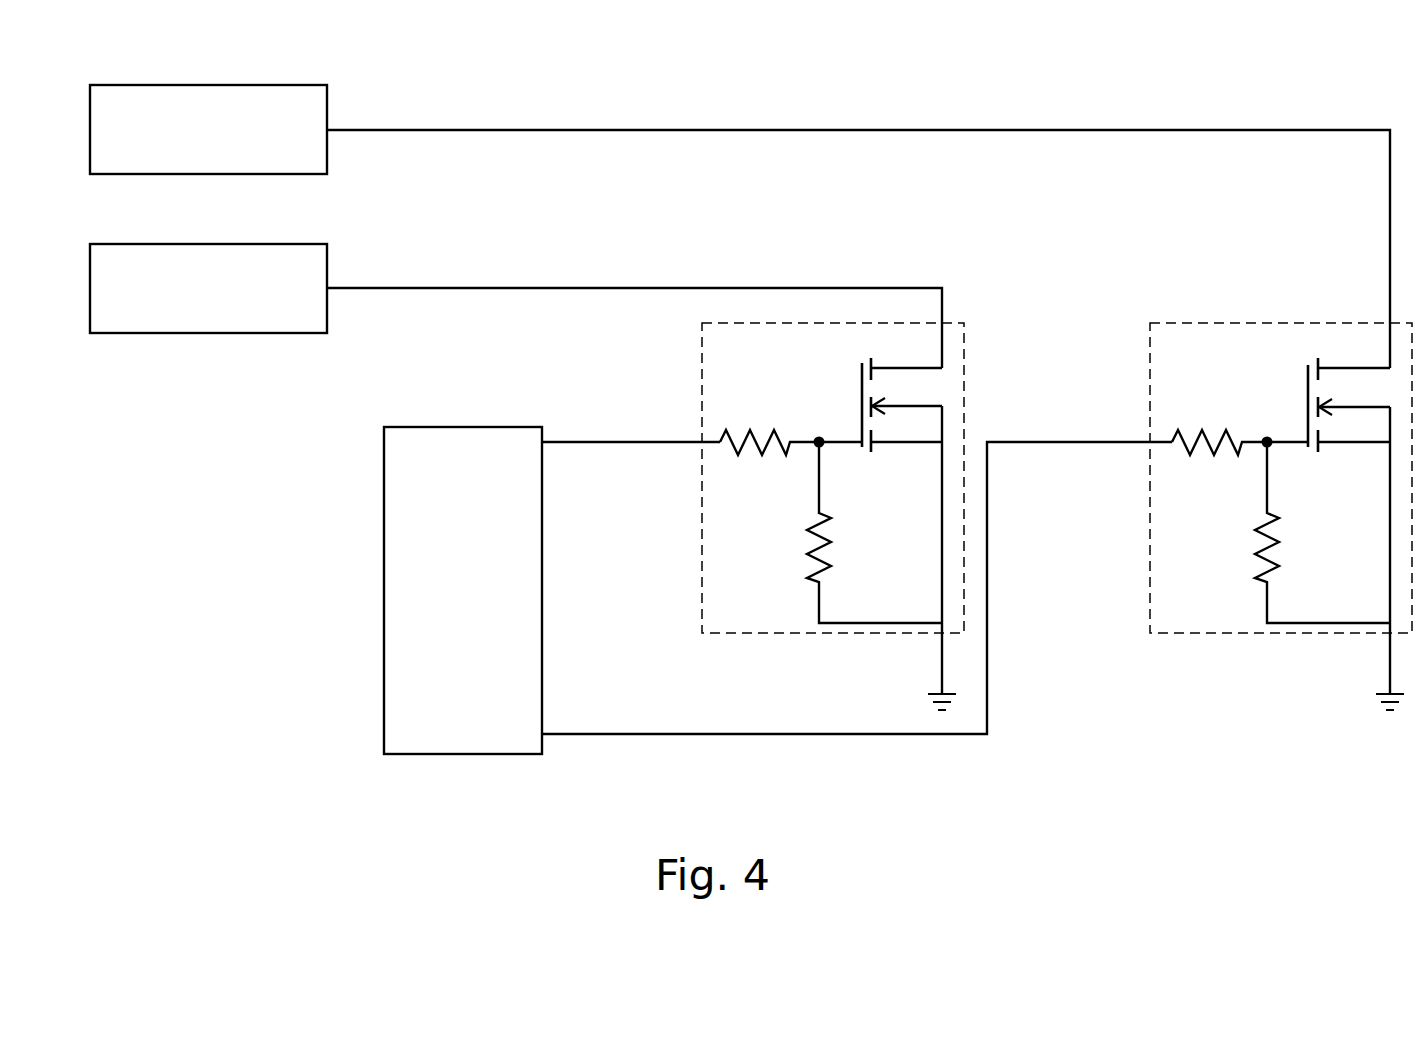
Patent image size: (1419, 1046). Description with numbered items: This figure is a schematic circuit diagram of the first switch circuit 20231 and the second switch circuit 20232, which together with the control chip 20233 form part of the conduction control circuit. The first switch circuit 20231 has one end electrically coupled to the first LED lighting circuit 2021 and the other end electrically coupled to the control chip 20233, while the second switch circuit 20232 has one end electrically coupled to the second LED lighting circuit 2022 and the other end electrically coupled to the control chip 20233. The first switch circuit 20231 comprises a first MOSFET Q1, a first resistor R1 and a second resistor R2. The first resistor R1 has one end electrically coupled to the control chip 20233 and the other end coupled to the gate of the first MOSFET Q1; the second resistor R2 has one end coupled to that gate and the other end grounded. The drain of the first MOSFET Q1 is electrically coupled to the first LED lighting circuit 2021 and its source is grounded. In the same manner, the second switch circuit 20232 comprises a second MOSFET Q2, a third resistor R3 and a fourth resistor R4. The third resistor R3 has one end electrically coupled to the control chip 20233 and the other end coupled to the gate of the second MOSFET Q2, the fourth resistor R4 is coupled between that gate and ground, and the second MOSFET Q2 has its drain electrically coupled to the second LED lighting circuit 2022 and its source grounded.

The first LED lighting circuit 2021 is at (122, 334).
The second LED lighting circuit 2022 is at (126, 85).
The first switch circuit 20231 is at (768, 516).
The second switch circuit 20232 is at (1217, 516).
The control chip 20233 is at (434, 426).
The first MOSFET Q1 is at (858, 374).
The second MOSFET Q2 is at (1304, 375).
The first resistor R1 is at (791, 425).
The second resistor R2 is at (874, 532).
The third resistor R3 is at (1240, 426).
The fourth resistor R4 is at (1322, 532).